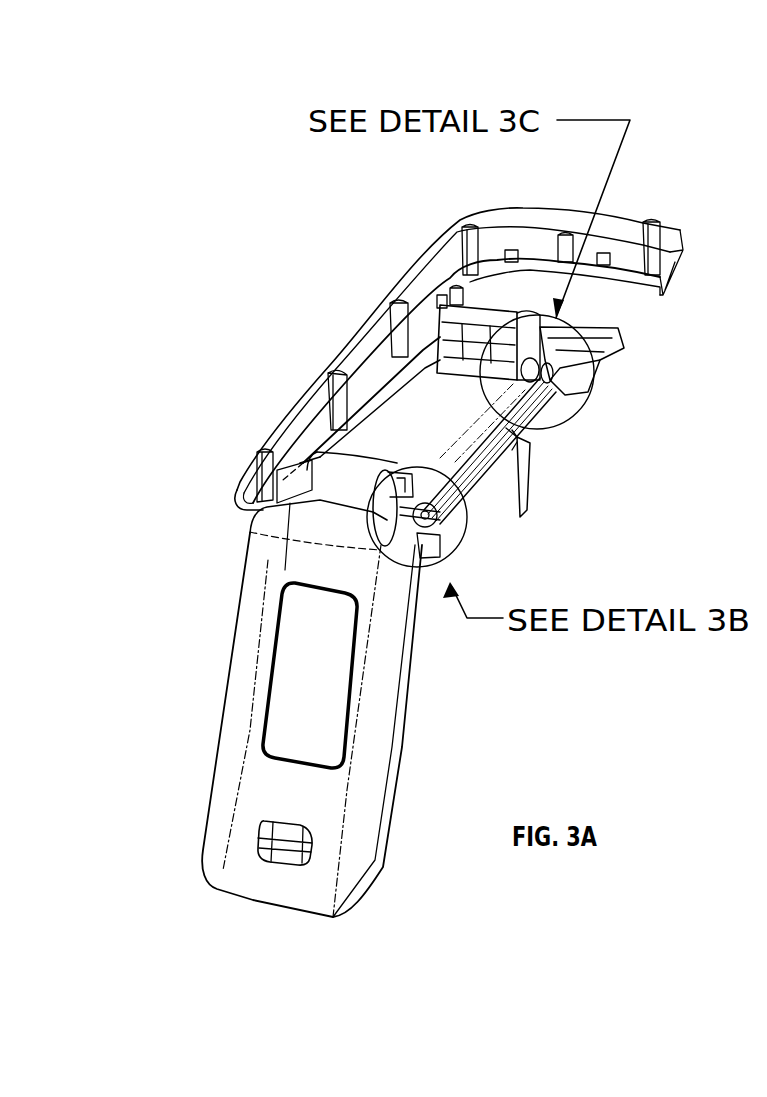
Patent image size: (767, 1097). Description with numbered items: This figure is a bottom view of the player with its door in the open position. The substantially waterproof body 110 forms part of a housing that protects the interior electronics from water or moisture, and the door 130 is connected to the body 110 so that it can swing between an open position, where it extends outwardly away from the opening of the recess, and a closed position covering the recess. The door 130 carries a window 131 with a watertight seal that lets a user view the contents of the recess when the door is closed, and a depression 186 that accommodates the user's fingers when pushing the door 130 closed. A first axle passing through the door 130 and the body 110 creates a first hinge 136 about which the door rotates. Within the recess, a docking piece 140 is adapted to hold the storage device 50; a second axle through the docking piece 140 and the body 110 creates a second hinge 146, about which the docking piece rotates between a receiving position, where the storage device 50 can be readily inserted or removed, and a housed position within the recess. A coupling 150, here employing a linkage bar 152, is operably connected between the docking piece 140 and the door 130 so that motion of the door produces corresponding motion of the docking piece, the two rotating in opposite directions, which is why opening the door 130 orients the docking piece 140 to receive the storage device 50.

The body 110 is at (237, 493).
The docking piece 140 is at (463, 340).
The second hinge 146 is at (630, 378).
The coupling 150 is at (584, 465).
The linkage bar 152 is at (540, 483).
The storage device 50 is at (498, 498).
The first hinge 136 is at (482, 522).
The door 130 is at (377, 695).
The window 131 is at (302, 677).
The depression 186 is at (280, 847).